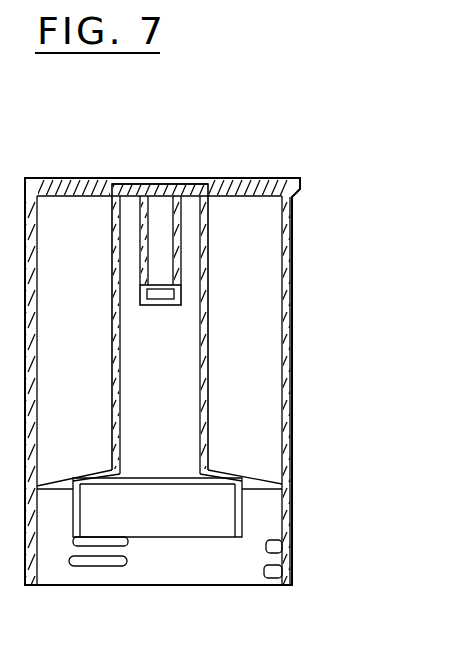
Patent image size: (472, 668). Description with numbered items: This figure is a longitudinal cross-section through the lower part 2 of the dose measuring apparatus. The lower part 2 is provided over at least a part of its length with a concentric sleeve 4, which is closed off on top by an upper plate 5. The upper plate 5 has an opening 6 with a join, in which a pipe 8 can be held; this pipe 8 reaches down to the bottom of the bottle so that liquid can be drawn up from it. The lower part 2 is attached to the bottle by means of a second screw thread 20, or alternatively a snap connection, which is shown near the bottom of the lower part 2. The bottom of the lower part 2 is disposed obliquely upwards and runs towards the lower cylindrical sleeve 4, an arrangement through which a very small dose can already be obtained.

The lower part 2 is at (300, 258).
The concentric sleeve 4 is at (208, 316).
The upper plate 5 is at (133, 183).
The opening 6 is at (160, 183).
The pipe 8 is at (165, 305).
The second screw thread 20 is at (108, 567).